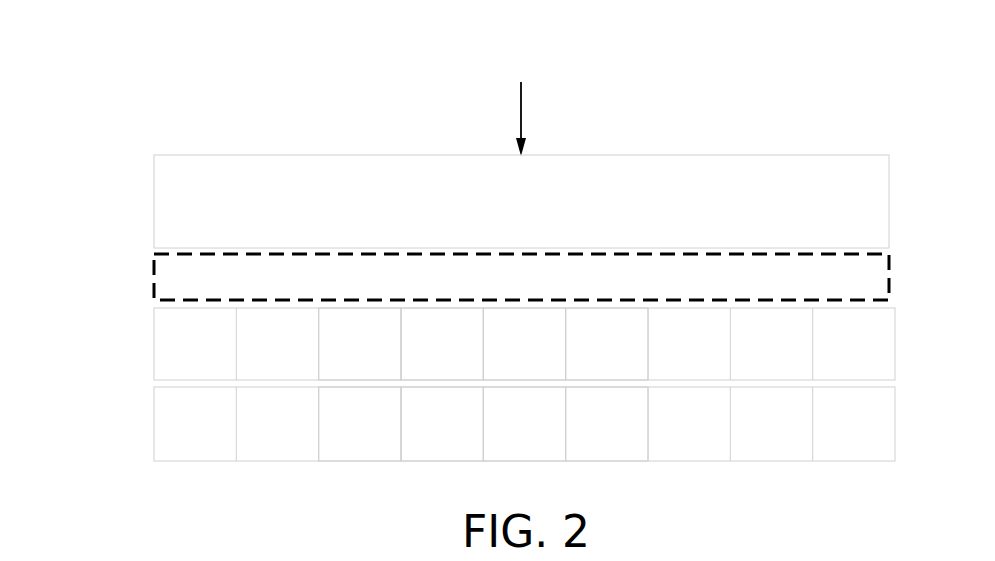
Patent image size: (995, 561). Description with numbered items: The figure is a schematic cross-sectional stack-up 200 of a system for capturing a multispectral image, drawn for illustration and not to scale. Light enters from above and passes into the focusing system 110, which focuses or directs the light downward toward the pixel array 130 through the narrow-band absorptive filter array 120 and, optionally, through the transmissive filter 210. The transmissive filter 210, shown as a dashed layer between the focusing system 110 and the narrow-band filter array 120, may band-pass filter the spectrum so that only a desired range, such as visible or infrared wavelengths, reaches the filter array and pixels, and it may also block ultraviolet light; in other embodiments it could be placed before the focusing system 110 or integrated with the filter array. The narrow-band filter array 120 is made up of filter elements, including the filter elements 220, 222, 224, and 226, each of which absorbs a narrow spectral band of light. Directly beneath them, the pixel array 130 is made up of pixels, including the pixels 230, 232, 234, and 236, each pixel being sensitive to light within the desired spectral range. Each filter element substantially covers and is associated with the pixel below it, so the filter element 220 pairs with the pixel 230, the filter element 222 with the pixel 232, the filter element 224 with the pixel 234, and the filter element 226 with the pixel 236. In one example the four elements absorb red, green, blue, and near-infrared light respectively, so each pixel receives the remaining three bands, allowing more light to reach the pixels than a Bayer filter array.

The stack-up 200 is at (168, 83).
The focusing system 110 is at (129, 246).
The transmissive filter 210 is at (122, 299).
The narrow-band absorptive filter array 120 is at (127, 380).
The pixel array 130 is at (127, 460).
The filter element 220 is at (360, 344).
The filter element 222 is at (442, 344).
The filter element 224 is at (524, 344).
The filter element 226 is at (607, 344).
The pixel 230 is at (360, 424).
The pixel 232 is at (442, 424).
The pixel 234 is at (524, 424).
The pixel 236 is at (607, 424).